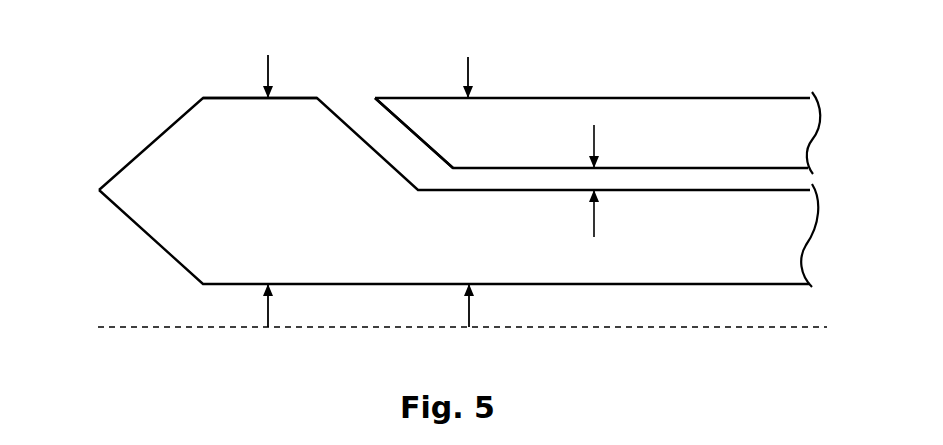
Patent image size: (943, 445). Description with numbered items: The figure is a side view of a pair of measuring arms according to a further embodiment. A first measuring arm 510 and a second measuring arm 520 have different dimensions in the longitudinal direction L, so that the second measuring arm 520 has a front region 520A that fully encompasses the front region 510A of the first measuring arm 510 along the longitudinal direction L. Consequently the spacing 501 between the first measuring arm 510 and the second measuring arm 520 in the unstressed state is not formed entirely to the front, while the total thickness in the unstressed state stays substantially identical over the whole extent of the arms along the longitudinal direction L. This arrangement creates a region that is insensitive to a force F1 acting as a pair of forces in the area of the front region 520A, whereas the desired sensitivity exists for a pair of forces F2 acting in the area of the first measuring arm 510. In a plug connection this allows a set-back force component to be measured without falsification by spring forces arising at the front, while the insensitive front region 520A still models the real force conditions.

The first measuring arm 510 is at (761, 79).
The front region of the first measuring arm 510A is at (424, 113).
The second measuring arm 520 is at (133, 133).
The front region of the second measuring arm 520A is at (215, 113).
The spacing 501 is at (600, 150).
The force F1 is at (272, 197).
The pair of forces F2 is at (473, 197).
The longitudinal direction L is at (682, 328).